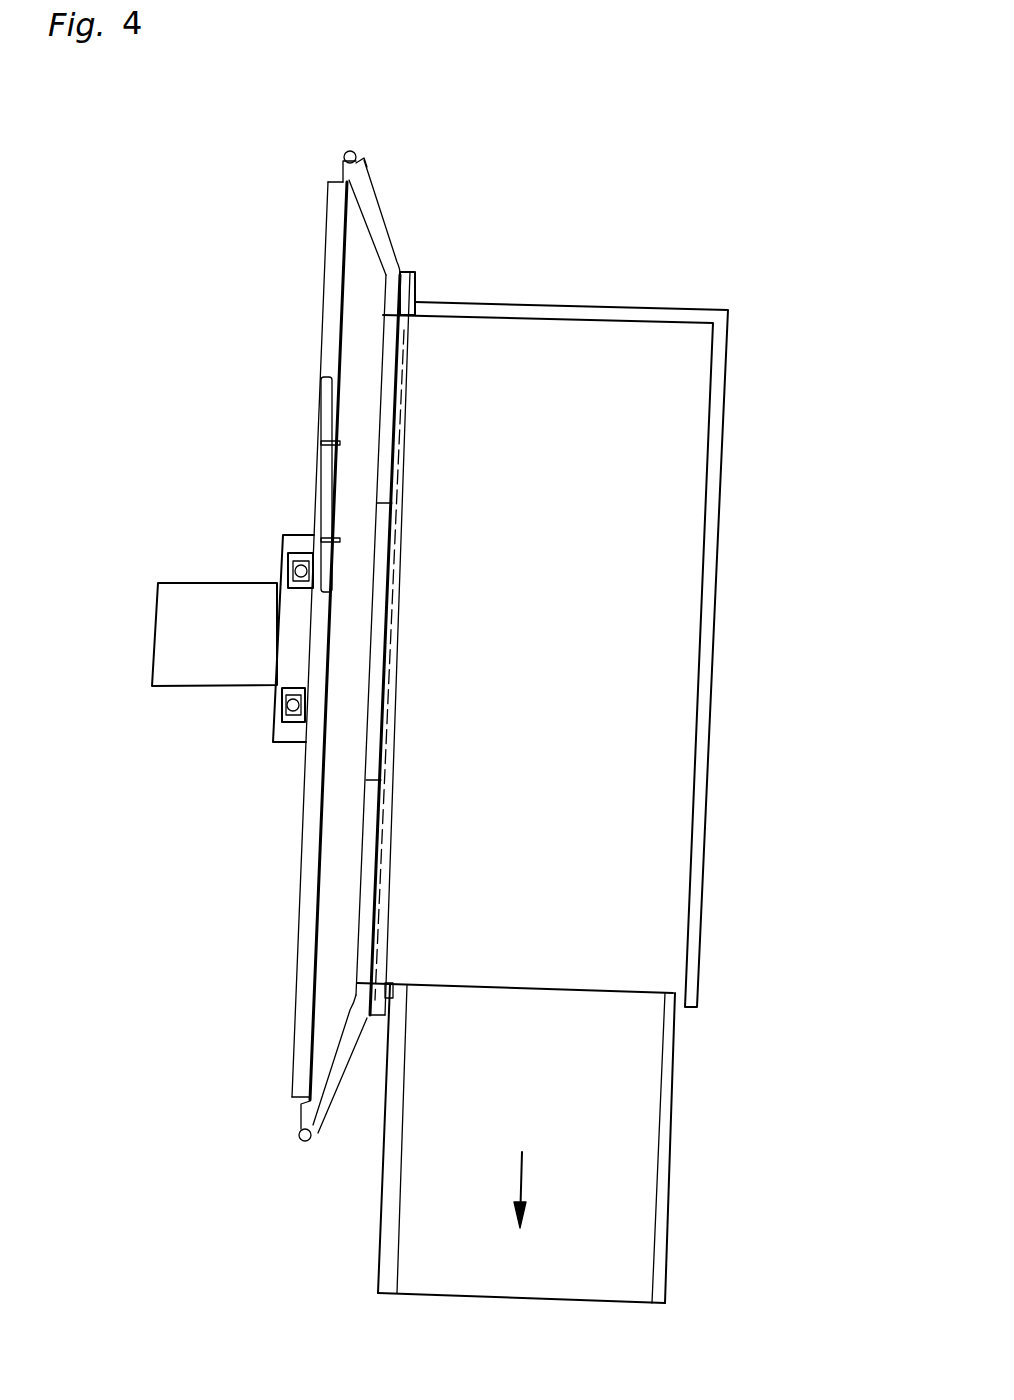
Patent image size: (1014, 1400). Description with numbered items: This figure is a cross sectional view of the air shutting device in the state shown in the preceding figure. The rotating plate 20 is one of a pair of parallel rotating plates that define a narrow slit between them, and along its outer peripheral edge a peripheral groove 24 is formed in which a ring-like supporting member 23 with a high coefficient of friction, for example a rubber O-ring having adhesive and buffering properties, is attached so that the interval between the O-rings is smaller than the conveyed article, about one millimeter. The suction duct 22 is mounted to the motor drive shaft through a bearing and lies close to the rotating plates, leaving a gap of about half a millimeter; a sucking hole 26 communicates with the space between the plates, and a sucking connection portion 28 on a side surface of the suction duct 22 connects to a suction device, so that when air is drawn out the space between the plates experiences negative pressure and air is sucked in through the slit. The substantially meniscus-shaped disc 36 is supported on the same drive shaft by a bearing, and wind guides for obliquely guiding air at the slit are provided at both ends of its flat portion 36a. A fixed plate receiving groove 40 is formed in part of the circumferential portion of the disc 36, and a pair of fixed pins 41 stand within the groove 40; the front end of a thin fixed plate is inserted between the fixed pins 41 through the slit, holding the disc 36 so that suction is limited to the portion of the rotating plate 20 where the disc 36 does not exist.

The rotating plate 20 is at (393, 250).
The suction duct 22 is at (726, 391).
The supporting member 23 is at (357, 159).
The peripheral groove 24 is at (364, 163).
The sucking hole 26 is at (393, 417).
The sucking connection portion 28 is at (669, 1197).
The disc 36 is at (326, 277).
The flat portion 36a is at (330, 197).
The fixed plate receiving groove 40 is at (322, 392).
The fixed pin 41 is at (318, 540).